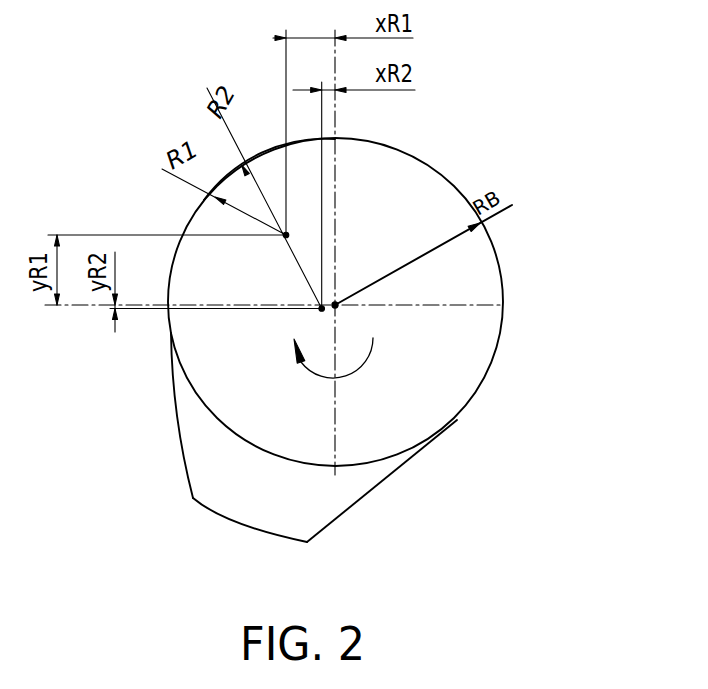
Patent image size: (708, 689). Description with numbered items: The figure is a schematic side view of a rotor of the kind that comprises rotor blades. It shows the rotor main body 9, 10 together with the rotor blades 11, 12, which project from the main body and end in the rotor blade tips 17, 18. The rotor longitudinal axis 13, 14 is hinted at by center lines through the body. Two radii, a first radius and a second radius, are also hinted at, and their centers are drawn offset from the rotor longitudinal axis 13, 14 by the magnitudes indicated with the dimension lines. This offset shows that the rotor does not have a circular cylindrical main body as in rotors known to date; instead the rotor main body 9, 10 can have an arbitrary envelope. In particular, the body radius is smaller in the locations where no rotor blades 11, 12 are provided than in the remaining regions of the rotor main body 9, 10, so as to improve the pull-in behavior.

The rotor main body 9 is at (407, 287).
The rotor main body 10 is at (425, 197).
The rotor blade 11 is at (343, 350).
The rotor blade 12 is at (412, 340).
The rotor longitudinal axis 13 is at (352, 252).
The rotor longitudinal axis 14 is at (335, 305).
The rotor blade tip 17 is at (170, 530).
The rotor blade tip 18 is at (188, 528).